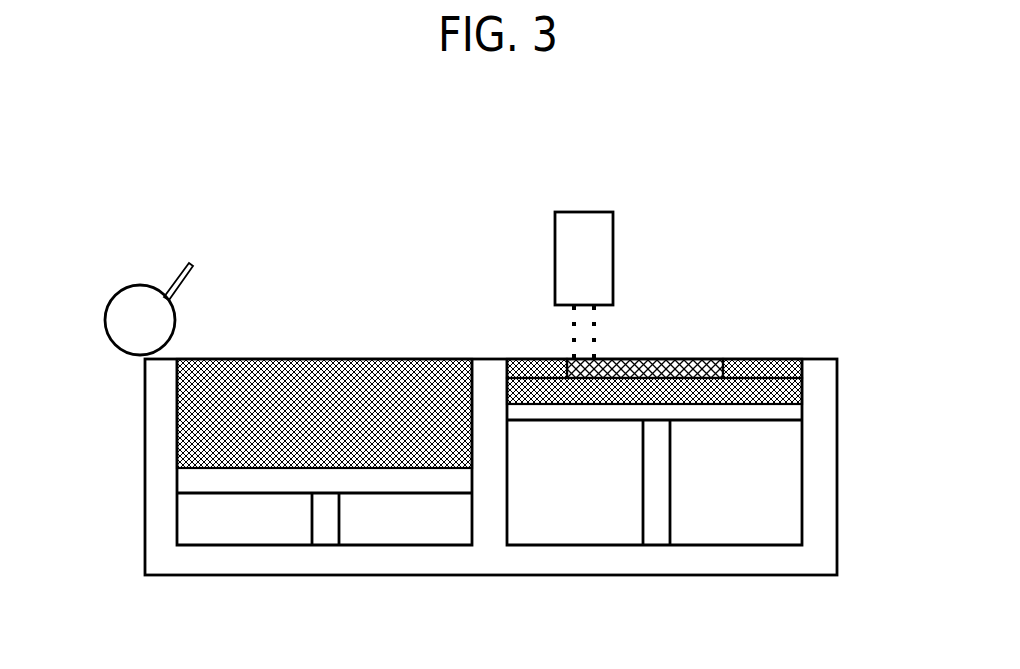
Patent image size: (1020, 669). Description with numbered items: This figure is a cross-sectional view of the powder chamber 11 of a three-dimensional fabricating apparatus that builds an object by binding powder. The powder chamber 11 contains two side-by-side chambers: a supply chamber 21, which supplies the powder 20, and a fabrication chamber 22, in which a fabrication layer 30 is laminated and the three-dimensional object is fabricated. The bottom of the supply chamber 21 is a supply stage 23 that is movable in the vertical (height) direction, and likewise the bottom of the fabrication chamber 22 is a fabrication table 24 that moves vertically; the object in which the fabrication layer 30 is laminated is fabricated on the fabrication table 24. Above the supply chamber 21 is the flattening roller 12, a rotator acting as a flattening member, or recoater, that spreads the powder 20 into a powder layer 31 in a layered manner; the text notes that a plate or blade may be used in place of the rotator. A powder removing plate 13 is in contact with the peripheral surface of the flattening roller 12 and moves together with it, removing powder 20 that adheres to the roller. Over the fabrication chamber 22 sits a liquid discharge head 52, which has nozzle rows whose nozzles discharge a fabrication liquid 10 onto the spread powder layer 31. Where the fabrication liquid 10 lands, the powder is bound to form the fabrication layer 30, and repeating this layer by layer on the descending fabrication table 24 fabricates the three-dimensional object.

The fabrication liquid 10 is at (574, 323).
The powder chamber 11 is at (741, 172).
The flattening roller 12 is at (126, 322).
The powder removing plate 13 is at (192, 265).
The powder 20 is at (338, 378).
The supply chamber 21 is at (145, 467).
The fabrication chamber 22 is at (827, 473).
The supply stage 23 is at (387, 488).
The fabrication table 24 is at (615, 413).
The fabrication layer 30 is at (698, 377).
The powder layer 31 is at (745, 372).
The liquid discharge head 52 is at (585, 227).